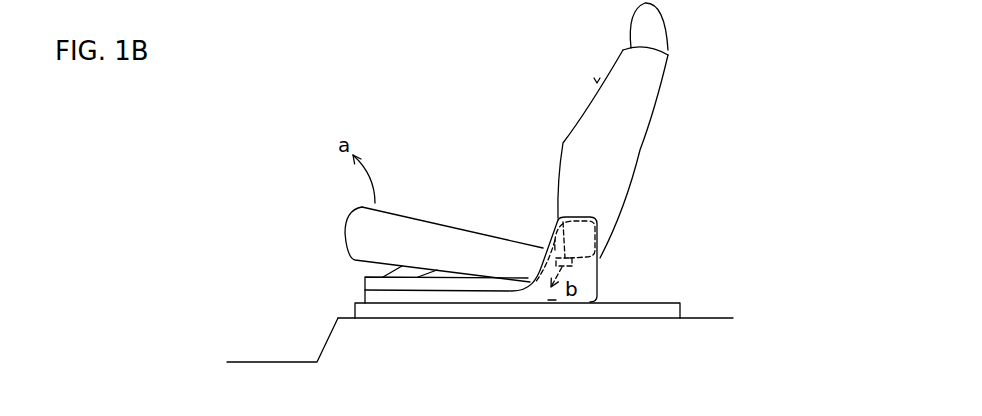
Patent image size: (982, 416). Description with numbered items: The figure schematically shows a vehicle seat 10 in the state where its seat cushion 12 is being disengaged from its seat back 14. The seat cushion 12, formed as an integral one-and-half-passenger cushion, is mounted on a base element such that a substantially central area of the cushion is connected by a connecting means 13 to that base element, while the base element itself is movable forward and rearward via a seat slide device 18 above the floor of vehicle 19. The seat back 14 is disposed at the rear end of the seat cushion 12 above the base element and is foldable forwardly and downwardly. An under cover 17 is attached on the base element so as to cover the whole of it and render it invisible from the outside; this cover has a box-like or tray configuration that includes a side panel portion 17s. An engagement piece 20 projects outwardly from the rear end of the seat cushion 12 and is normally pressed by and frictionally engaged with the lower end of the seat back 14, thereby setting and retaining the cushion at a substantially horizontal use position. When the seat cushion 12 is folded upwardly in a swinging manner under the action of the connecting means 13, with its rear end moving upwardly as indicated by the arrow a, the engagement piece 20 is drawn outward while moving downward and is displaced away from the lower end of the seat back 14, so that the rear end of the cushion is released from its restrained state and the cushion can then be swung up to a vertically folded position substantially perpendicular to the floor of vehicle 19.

The vehicle seat 10 is at (524, 152).
The seat cushion 12 is at (440, 227).
The connecting means 13 is at (393, 274).
The seat back 14 is at (563, 145).
The under cover 17 is at (608, 267).
The side panel portion 17s is at (553, 298).
The seat slide device 18 is at (677, 302).
The floor of vehicle 19 is at (710, 317).
The engagement piece 20 is at (556, 231).